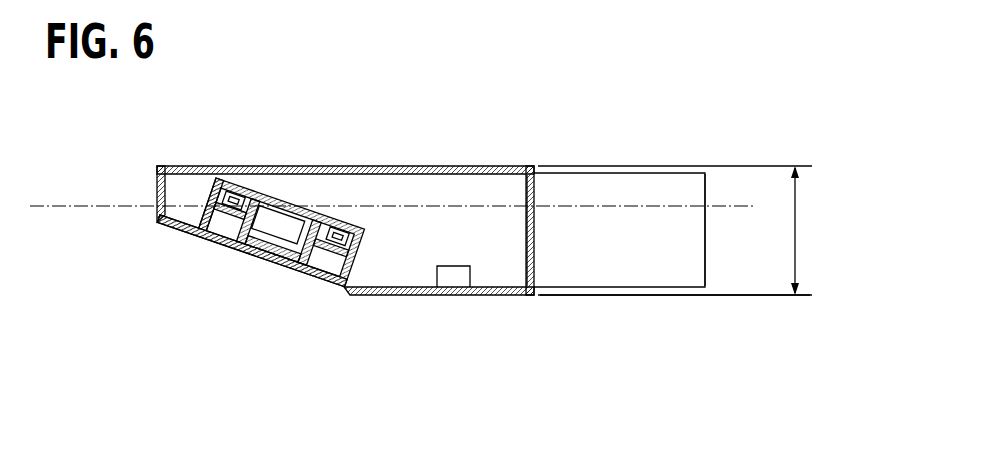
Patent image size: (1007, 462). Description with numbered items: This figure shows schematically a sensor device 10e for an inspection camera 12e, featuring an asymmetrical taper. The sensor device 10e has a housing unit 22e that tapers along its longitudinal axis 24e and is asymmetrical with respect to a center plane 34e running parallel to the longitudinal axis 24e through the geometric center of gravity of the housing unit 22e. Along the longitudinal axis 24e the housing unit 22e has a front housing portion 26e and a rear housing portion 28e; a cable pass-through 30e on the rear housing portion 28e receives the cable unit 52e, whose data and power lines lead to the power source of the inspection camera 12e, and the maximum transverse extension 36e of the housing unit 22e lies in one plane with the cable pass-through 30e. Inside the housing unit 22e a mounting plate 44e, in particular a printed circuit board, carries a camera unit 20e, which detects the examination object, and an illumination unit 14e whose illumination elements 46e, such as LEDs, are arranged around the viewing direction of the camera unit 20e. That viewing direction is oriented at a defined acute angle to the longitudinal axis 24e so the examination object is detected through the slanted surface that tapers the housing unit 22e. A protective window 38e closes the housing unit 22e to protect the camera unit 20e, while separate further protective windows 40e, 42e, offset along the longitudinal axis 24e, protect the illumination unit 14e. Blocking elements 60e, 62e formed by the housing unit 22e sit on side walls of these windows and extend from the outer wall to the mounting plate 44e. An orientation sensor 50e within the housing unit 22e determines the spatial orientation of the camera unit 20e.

The sensor device 10e is at (425, 167).
The inspection camera 12e is at (683, 273).
The illumination unit 14e is at (338, 230).
The camera unit 20e is at (270, 263).
The housing unit 22e is at (479, 296).
The longitudinal axis 24e is at (632, 206).
The front housing portion 26e is at (158, 194).
The rear housing portion 28e is at (523, 165).
The cable pass-through 30e is at (534, 266).
The center plane 34e is at (728, 206).
The maximum transverse extension 36e is at (795, 217).
The protective window 38e is at (242, 254).
The further protective window 40e is at (334, 263).
The further protective window 42e is at (216, 178).
The mounting plate 44e is at (363, 228).
The illumination element 46e is at (242, 193).
The orientation sensor 50e is at (457, 289).
The cable unit 52e is at (627, 291).
The blocking element 60e is at (203, 241).
The blocking element 62e is at (313, 268).